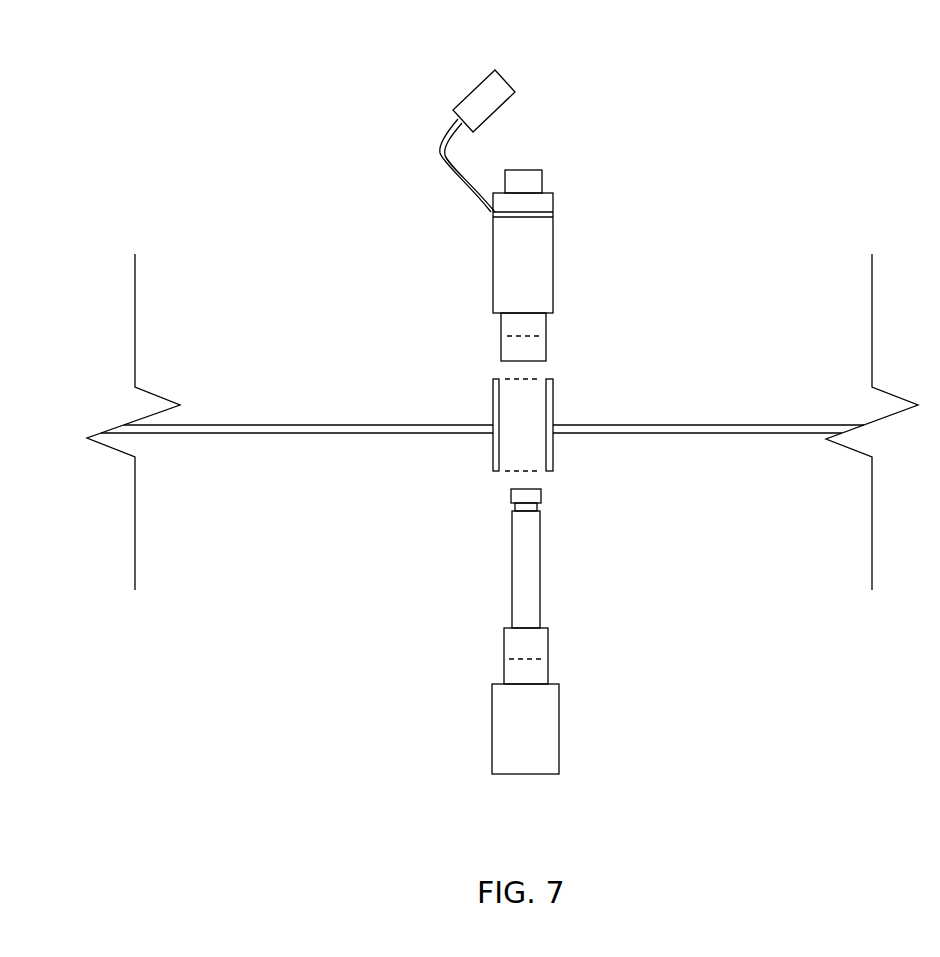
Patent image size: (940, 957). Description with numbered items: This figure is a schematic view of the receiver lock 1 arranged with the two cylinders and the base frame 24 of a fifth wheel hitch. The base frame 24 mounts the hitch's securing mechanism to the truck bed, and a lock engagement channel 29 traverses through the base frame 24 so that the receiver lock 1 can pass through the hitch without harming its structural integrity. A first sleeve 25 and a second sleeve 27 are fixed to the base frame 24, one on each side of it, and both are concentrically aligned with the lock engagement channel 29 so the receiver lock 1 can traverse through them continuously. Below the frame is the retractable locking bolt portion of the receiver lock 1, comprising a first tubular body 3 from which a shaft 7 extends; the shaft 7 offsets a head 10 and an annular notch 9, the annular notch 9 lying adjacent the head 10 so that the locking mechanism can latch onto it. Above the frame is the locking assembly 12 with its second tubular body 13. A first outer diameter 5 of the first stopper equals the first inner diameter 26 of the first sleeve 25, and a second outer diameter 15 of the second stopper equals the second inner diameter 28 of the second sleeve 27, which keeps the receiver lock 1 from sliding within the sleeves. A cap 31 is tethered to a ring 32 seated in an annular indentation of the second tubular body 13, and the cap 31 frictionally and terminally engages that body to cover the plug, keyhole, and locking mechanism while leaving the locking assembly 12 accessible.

The receiver lock 1 is at (489, 190).
The first tubular body 3 is at (553, 712).
The first outer diameter 5 is at (513, 660).
The shaft 7 is at (535, 569).
The annular notch 9 is at (520, 505).
The head 10 is at (535, 495).
The locking assembly 12 is at (495, 634).
The second tubular body 13 is at (537, 184).
The second outer diameter 15 is at (507, 336).
The base frame 24 is at (333, 428).
The first sleeve 25 is at (550, 415).
The first inner diameter 26 is at (508, 471).
The second sleeve 27 is at (550, 448).
The second inner diameter 28 is at (508, 386).
The lock engagement channel 29 is at (524, 403).
The cap 31 is at (502, 99).
The ring 32 is at (495, 213).